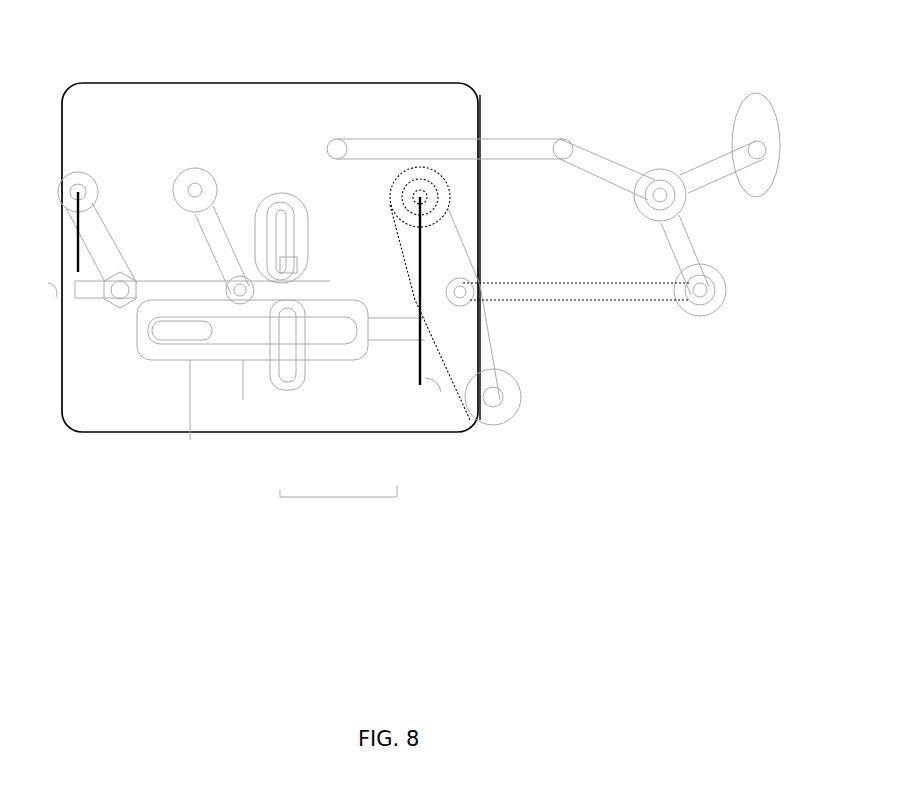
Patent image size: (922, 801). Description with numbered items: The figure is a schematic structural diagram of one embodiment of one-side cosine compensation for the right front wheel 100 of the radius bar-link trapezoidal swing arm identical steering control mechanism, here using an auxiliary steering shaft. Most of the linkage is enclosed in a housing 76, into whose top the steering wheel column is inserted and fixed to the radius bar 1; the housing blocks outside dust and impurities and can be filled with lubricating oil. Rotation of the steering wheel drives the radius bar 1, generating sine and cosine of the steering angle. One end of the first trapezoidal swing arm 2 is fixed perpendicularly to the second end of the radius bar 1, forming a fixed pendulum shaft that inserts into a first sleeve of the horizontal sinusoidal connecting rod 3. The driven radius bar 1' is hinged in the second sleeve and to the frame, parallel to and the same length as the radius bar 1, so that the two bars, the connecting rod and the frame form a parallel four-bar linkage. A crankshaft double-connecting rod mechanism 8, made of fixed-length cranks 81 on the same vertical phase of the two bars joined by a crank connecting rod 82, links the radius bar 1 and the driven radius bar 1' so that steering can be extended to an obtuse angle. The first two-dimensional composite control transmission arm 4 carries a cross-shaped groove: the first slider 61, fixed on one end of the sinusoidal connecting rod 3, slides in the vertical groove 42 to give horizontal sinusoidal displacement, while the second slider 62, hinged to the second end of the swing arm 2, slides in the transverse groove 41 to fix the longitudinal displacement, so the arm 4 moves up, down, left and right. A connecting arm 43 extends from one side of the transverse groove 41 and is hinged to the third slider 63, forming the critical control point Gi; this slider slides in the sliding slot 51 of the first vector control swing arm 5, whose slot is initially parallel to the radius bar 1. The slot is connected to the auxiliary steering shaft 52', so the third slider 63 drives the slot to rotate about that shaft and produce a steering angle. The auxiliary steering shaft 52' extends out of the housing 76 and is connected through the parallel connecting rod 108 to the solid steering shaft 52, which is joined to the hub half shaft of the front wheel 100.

The housing 76 is at (192, 82).
The crank connecting rod 82 is at (484, 125).
The fixed-length crank 81 is at (606, 158).
The crankshaft double-connecting rod mechanism 8 is at (607, 80).
The radius bar 1 is at (217, 207).
The driven radius bar 1' is at (80, 227).
The sinusoidal connecting rod 3 is at (192, 293).
The first trapezoidal swing arm 2 is at (190, 400).
The second slider 62 is at (150, 352).
The first slider 61 is at (303, 262).
The first two-dimensional composite control transmission arm 4 is at (338, 508).
The transverse groove 41 is at (243, 400).
The vertical groove 42 is at (327, 395).
The connecting arm 43 is at (407, 400).
The first vector control swing arm 5 is at (480, 233).
The sliding slot 51 is at (492, 418).
The solid steering shaft 52 is at (699, 201).
The auxiliary steering shaft 52' is at (422, 239).
The third slider 63 is at (490, 358).
The front wheel 100 is at (772, 100).
The parallel connecting rod 108 is at (582, 282).
The critical control point Gi is at (488, 322).